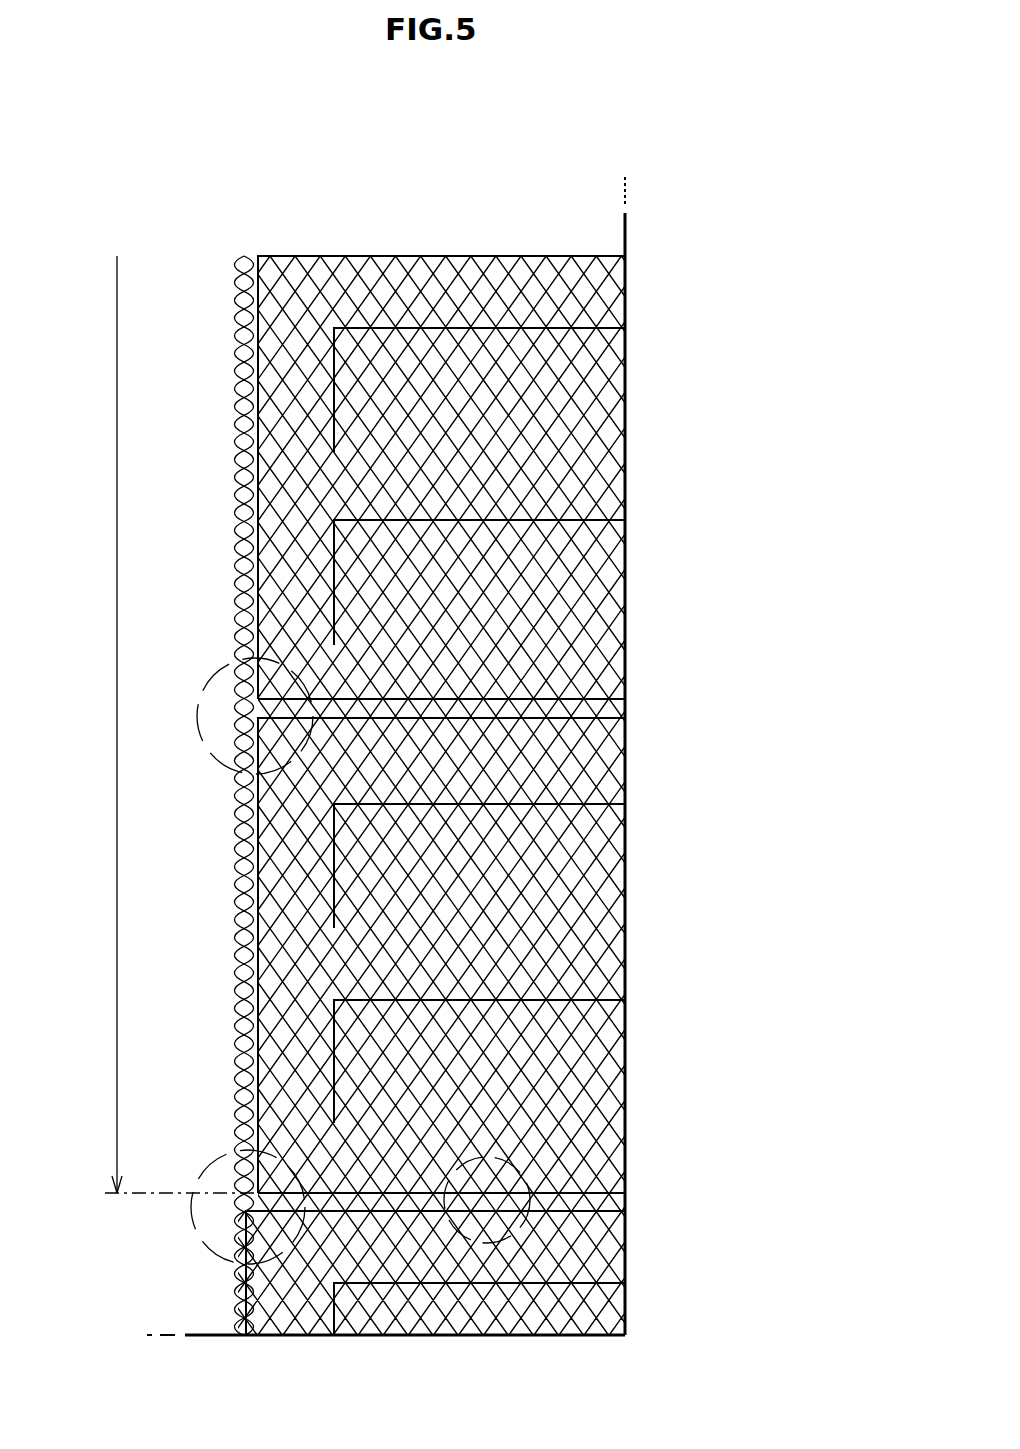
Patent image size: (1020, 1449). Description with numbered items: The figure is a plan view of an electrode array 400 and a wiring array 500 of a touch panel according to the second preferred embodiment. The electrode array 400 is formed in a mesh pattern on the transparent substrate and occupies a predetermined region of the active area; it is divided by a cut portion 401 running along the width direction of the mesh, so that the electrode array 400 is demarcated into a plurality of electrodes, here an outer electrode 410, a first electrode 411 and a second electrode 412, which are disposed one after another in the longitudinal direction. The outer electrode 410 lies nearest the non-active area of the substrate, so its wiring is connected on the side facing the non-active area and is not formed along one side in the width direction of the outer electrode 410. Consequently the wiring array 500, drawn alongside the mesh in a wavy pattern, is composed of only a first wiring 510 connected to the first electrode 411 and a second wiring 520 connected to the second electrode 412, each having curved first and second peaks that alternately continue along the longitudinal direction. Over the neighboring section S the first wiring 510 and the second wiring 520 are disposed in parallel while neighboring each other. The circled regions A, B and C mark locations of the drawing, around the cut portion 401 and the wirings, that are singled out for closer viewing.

The electrode array 400 is at (445, 711).
The outer electrode 410 is at (636, 292).
The first electrode 411 is at (636, 767).
The second electrode 412 is at (636, 1255).
The cut portion 401 is at (622, 708).
The wiring array 500 is at (510, 754).
The first wiring 510 is at (257, 452).
The second wiring 520 is at (241, 510).
The neighboring section S is at (107, 724).
The detail region A is at (470, 1160).
The detail region B is at (248, 715).
The detail region C is at (239, 1207).